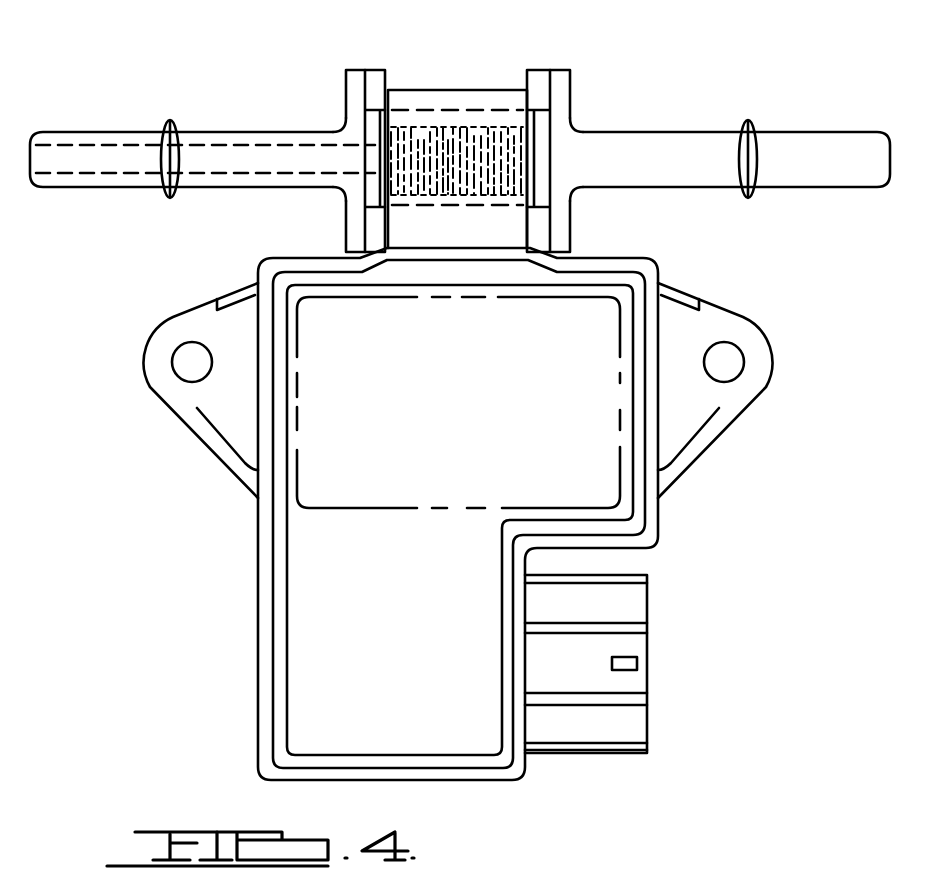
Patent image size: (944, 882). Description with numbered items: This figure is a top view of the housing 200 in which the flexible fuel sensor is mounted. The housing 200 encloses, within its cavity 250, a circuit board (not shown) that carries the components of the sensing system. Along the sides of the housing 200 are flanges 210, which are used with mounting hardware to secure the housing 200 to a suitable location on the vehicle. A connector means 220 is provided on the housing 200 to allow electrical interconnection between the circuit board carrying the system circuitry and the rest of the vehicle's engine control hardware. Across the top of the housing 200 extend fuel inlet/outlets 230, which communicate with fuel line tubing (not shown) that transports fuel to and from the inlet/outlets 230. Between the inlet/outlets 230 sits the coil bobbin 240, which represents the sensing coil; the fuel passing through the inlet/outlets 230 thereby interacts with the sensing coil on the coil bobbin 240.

The housing 200 is at (170, 636).
The flanges 210 is at (220, 410).
The connector means 220 is at (636, 755).
The fuel inlet/outlets 230 is at (202, 130).
The coil bobbin 240 is at (453, 130).
The cavity 250 is at (362, 473).